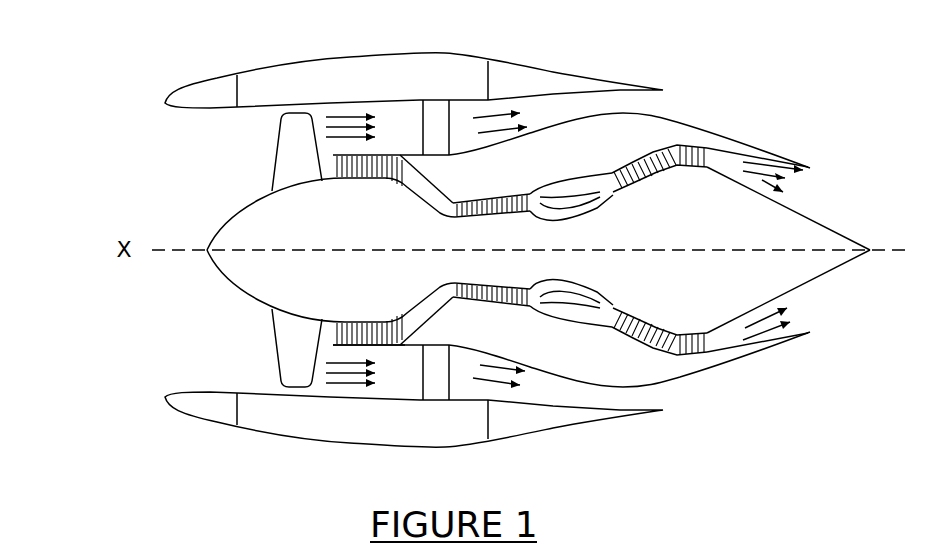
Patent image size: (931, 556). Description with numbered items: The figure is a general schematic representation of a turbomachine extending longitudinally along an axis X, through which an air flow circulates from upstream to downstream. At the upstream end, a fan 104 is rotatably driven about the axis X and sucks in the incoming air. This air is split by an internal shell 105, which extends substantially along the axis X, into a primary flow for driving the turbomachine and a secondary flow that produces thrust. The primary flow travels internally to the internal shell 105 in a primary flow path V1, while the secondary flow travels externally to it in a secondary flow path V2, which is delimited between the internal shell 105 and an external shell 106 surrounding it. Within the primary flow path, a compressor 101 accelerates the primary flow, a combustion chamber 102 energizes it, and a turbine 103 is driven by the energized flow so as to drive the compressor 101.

The compressor 101 is at (408, 198).
The combustion chamber 102 is at (598, 208).
The turbine 103 is at (681, 179).
The upstream fan 104 is at (293, 337).
The internal shell 105 is at (385, 345).
The external shell 106 is at (353, 398).
The primary flow path V1 is at (417, 181).
The secondary flow path V2 is at (392, 112).